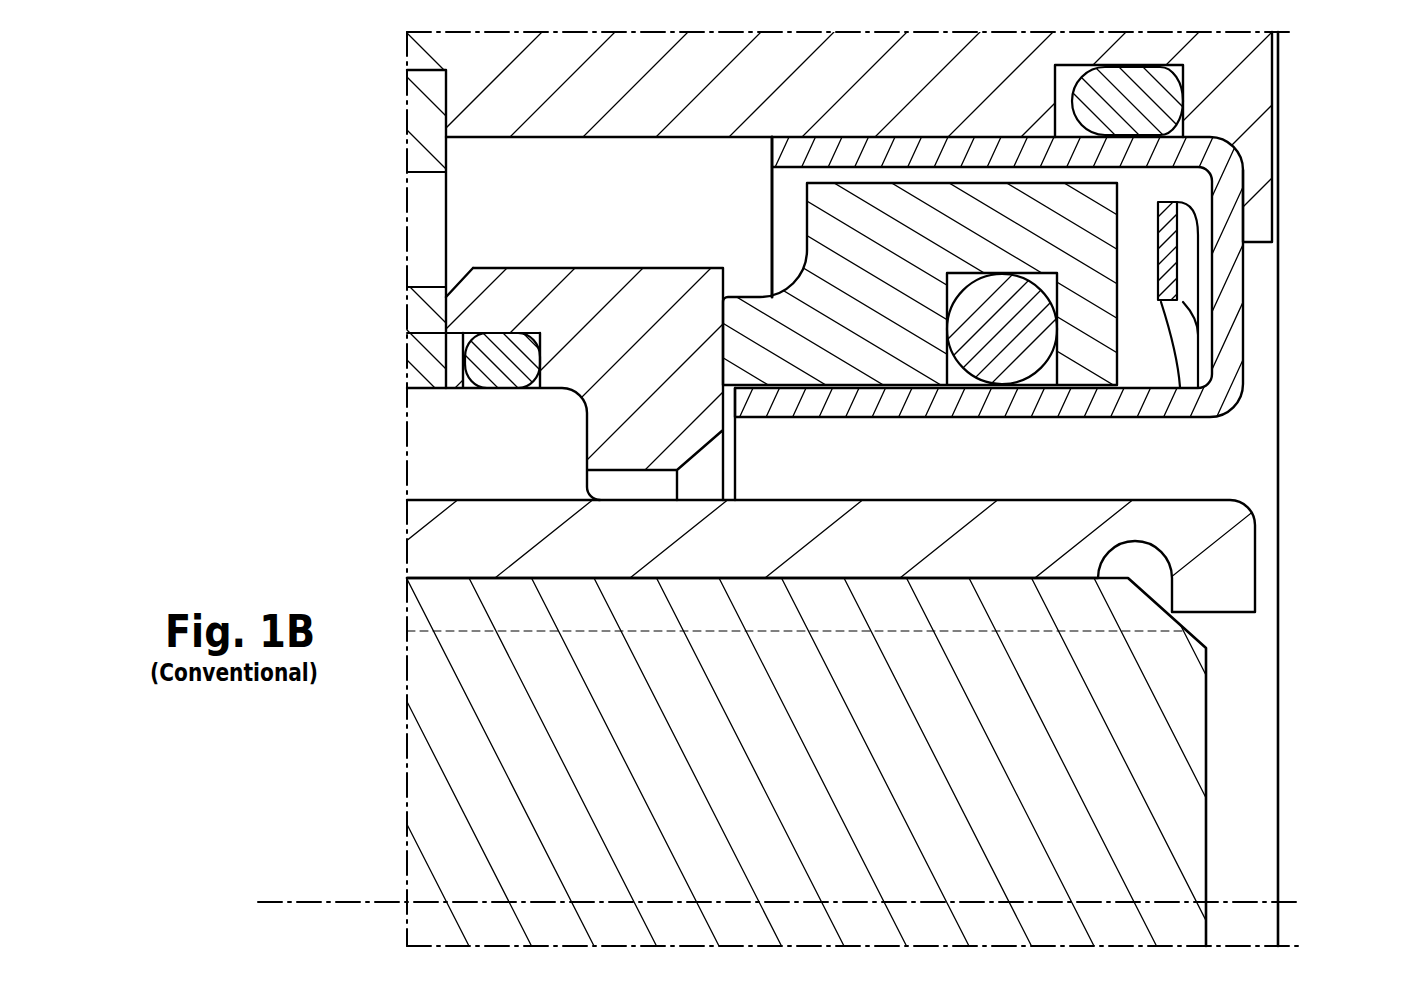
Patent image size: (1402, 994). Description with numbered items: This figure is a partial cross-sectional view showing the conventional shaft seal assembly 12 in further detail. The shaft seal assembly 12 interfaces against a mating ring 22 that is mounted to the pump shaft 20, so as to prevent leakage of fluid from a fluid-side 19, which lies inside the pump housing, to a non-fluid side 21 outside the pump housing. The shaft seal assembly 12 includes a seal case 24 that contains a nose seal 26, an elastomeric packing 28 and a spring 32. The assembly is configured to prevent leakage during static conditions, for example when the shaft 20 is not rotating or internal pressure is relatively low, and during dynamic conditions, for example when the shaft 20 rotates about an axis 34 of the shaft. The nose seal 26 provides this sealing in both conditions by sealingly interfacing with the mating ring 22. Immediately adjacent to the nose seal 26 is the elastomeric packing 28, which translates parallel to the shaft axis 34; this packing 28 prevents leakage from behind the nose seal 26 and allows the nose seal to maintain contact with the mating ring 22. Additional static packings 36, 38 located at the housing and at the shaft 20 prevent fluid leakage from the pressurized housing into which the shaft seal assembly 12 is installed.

The conventional shaft seal assembly 12 is at (772, 175).
The fluid-side 19 is at (538, 230).
The pump shaft 20 is at (543, 430).
The non-fluid side 21 is at (735, 470).
The mating ring 22 is at (588, 292).
The seal case 24 is at (1227, 337).
The nose seal 26 is at (1073, 207).
The elastomeric packing 28 is at (1005, 312).
The spring 32 is at (1173, 255).
The axis 34 is at (472, 902).
The static packing 36 is at (498, 370).
The static packing 38 is at (1140, 100).